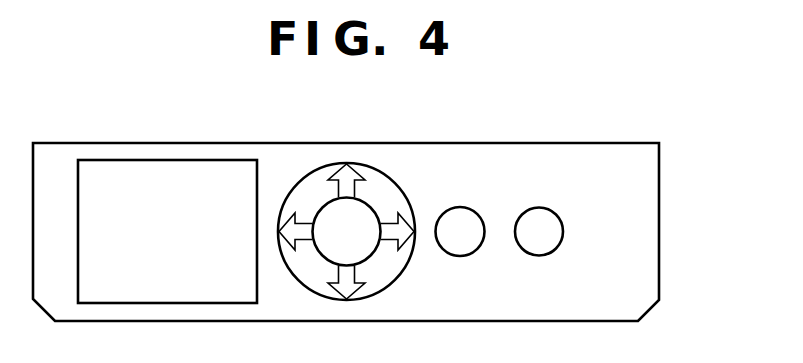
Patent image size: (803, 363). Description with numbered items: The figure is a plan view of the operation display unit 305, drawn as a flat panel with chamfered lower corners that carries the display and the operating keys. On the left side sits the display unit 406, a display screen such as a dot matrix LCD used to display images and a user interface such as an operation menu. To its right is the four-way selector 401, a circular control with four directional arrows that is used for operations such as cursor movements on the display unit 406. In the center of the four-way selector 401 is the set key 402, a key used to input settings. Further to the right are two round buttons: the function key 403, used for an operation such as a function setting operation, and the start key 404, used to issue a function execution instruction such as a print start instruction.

The operation display unit 305 is at (630, 142).
The 4-way selector 401 is at (313, 170).
The set key 402 is at (373, 255).
The function key 403 is at (446, 207).
The start key 404 is at (526, 208).
The display unit 406 is at (104, 162).